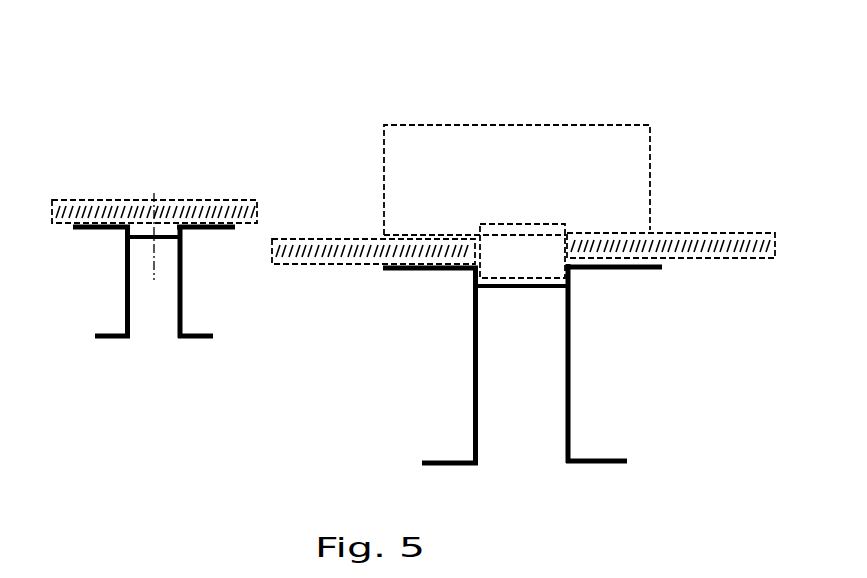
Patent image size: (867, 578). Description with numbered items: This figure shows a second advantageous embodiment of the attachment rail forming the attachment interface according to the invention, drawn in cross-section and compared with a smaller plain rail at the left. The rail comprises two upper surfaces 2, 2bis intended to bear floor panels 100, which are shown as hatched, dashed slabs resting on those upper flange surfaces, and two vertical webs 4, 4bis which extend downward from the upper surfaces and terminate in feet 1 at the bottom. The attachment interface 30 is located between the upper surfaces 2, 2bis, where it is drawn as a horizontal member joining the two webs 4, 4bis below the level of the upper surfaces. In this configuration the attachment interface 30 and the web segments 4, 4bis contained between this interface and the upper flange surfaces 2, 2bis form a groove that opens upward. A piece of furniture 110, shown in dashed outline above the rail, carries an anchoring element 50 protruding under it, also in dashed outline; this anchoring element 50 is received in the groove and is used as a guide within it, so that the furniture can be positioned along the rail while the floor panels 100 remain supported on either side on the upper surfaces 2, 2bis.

The foot flange 1 is at (452, 465).
The upper surface 2 is at (416, 270).
The upper flange (second profile) 2bis is at (616, 268).
The vertical web 4 is at (475, 400).
The vertical web 4bis is at (571, 403).
The attachment interface 30 is at (508, 287).
The anchoring element 50 is at (532, 255).
The floor panel 100 is at (115, 203).
The piece of furniture 110 is at (512, 158).